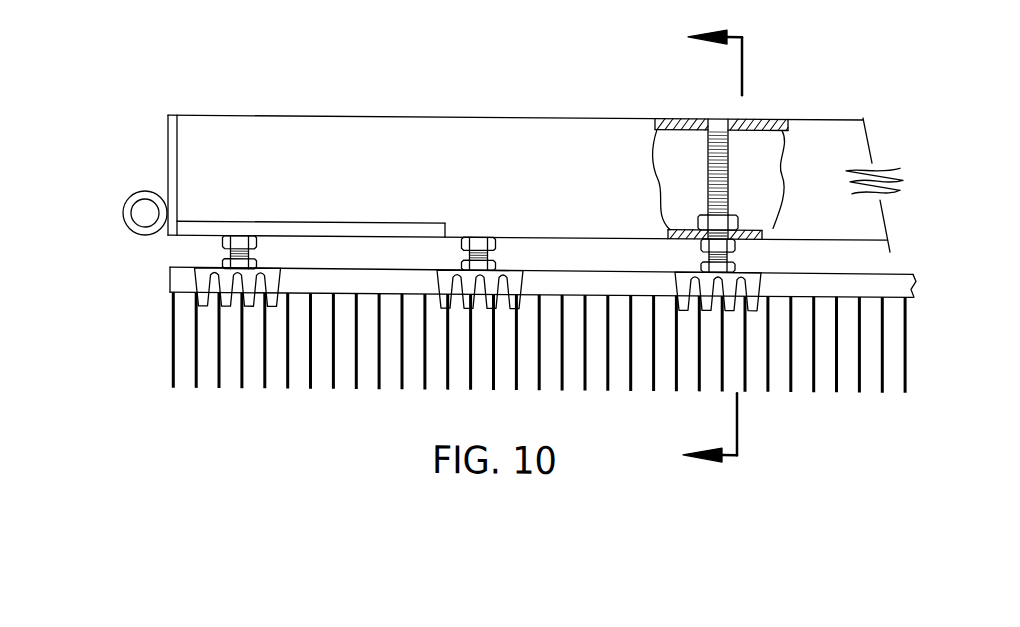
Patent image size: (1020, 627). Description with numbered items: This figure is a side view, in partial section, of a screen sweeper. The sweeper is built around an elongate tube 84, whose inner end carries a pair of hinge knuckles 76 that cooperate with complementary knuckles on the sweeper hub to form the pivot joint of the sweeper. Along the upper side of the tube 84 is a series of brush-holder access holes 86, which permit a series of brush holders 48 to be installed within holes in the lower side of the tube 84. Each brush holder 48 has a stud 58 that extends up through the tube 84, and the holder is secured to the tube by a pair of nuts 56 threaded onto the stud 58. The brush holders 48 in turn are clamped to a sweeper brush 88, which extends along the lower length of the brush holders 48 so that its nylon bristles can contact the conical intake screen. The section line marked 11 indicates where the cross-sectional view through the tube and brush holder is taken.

The elongate tube 84 is at (340, 114).
The hinge knuckles 76 is at (138, 192).
The brush-holder access holes 86 is at (702, 114).
The stud 58 is at (718, 148).
The nuts 56 is at (738, 242).
The brush holders 48 is at (197, 267).
The sweeper brush 88 is at (172, 372).
The section line 11- 11 is at (732, 249).